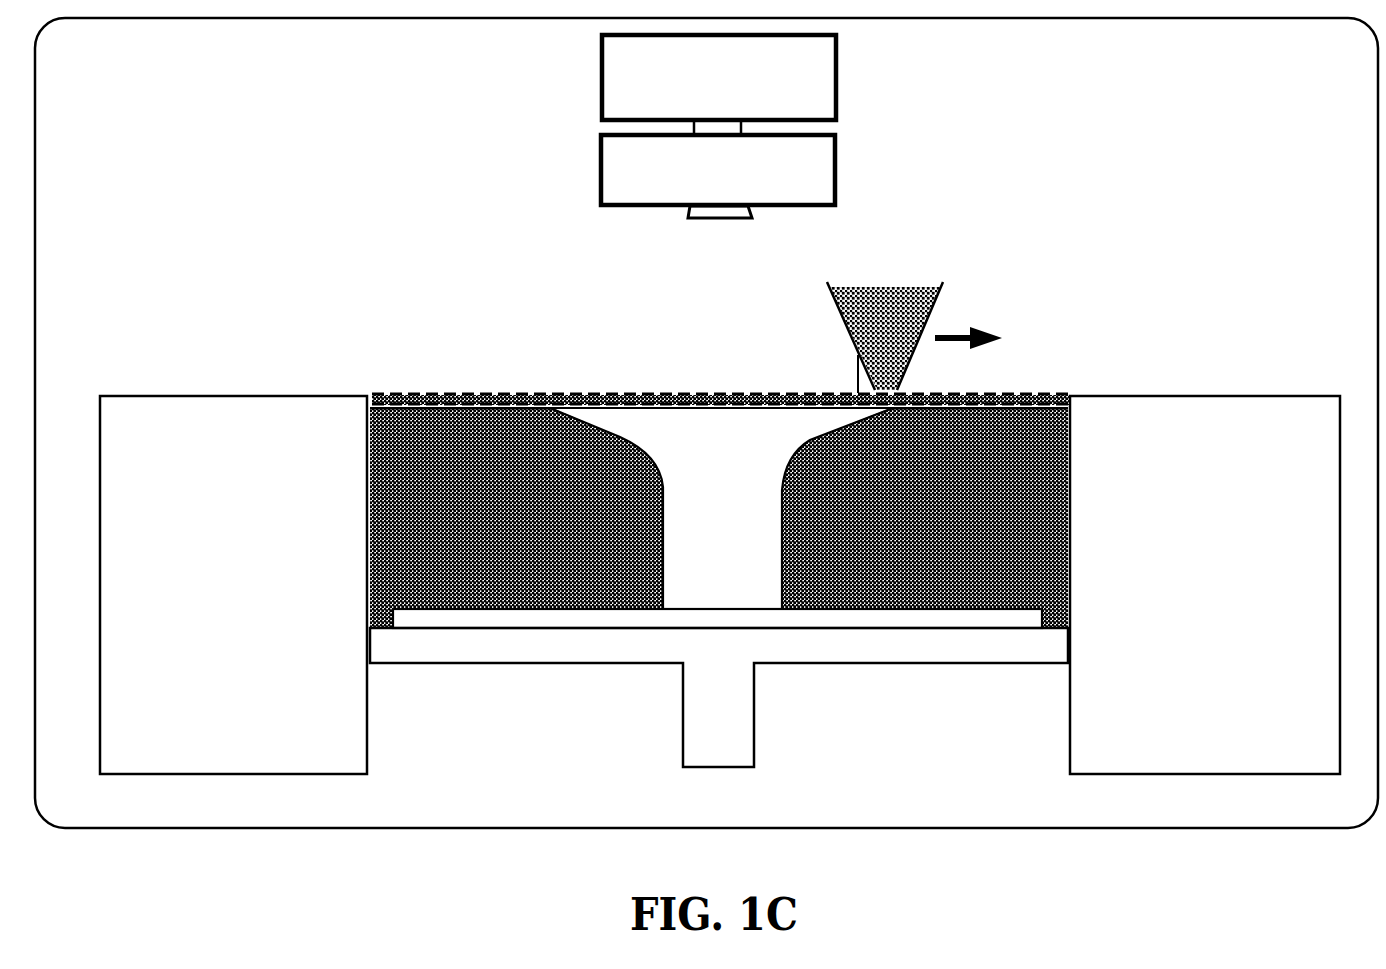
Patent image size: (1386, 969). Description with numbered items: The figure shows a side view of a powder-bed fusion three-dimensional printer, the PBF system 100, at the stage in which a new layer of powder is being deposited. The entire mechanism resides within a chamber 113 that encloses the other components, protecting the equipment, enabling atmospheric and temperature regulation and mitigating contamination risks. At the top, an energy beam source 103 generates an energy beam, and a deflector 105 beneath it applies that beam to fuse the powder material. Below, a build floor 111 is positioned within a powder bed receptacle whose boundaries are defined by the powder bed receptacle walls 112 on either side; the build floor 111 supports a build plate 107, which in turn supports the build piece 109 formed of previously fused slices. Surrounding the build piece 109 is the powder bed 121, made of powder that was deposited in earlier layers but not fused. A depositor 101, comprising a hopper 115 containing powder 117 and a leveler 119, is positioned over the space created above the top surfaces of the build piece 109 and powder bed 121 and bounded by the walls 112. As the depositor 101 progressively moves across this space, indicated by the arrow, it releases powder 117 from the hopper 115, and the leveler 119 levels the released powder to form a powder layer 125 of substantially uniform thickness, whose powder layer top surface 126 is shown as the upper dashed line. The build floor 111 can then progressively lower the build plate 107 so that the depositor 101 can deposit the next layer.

The powder-bed fusion (PBF) system 100 is at (1046, 842).
The depositor 101 is at (852, 277).
The energy beam source 103 is at (784, 106).
The deflector 105 is at (798, 181).
The build plate 107 is at (1003, 608).
The build piece 109 is at (650, 407).
The build floor 111 is at (805, 663).
The powder bed receptacle wall 112 is at (1250, 612).
The chamber 113 is at (231, 821).
The hopper 115 is at (920, 333).
The powder 117 is at (880, 313).
The leveler 119 is at (856, 368).
The powder bed 121 is at (1003, 447).
The powder layer 125 is at (378, 401).
The powder layer top surface 126 is at (473, 393).